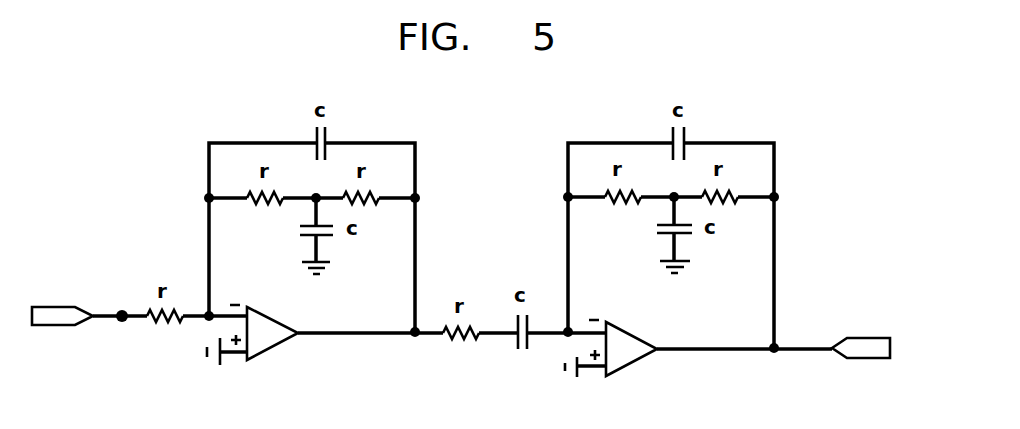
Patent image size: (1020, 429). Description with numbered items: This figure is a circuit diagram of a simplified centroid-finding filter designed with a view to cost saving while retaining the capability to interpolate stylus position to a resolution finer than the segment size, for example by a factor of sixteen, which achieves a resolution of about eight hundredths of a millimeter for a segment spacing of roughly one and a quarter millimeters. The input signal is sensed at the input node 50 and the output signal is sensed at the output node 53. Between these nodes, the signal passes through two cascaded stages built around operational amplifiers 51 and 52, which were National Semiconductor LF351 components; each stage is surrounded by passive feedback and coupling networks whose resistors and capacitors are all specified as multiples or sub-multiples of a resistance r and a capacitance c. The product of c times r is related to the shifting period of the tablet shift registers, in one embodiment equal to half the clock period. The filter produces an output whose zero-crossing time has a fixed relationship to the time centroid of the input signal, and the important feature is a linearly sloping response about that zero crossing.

The input node 50 is at (56, 312).
The operational amplifier 51 is at (266, 341).
The operational amplifier 52 is at (622, 355).
The output node 53 is at (870, 340).